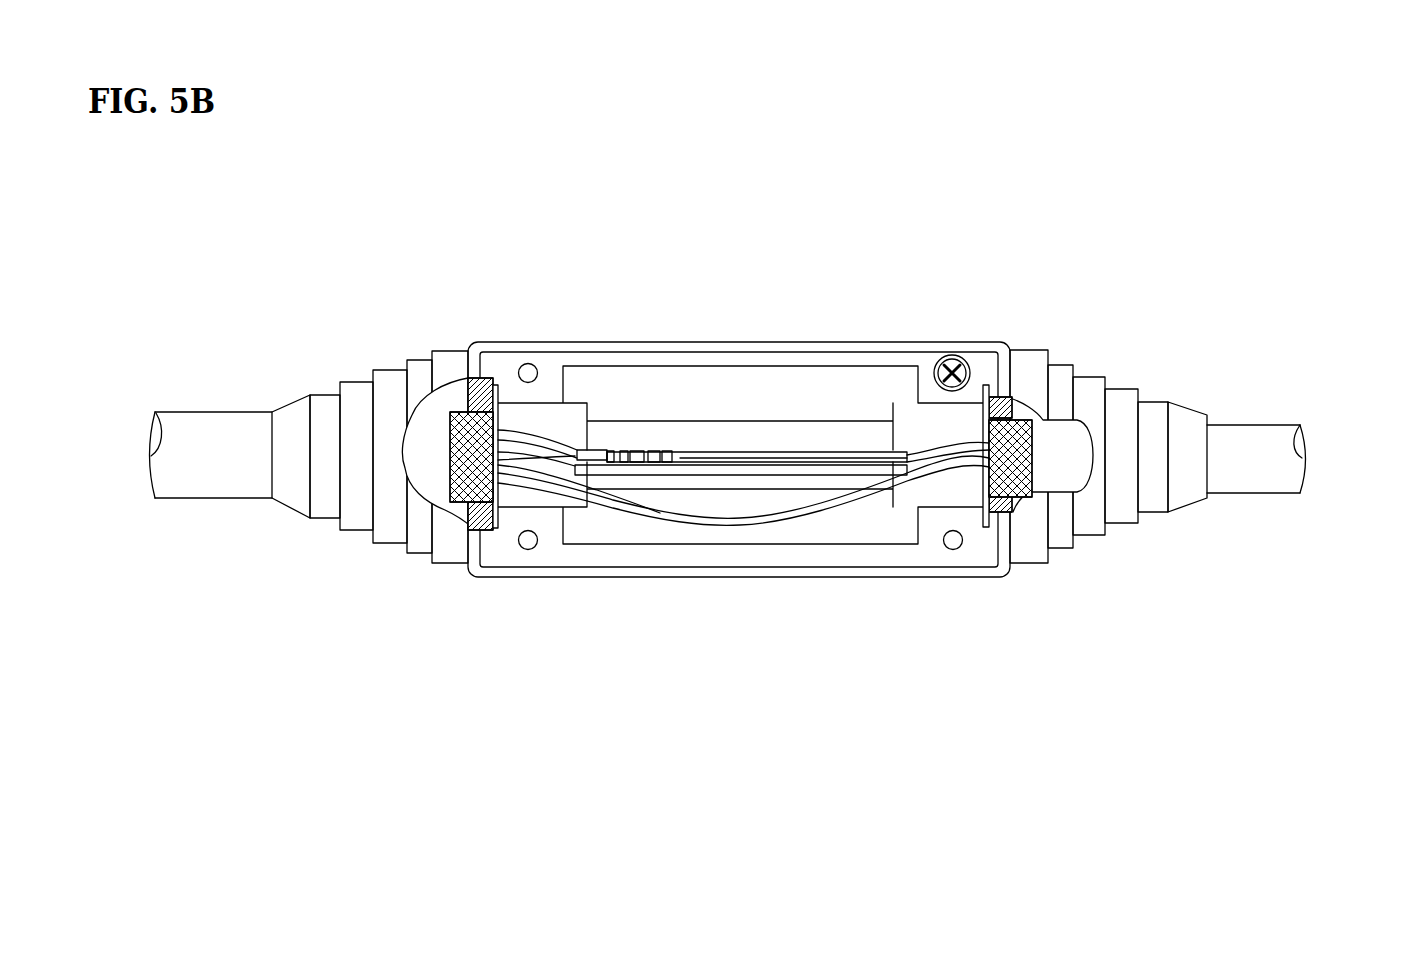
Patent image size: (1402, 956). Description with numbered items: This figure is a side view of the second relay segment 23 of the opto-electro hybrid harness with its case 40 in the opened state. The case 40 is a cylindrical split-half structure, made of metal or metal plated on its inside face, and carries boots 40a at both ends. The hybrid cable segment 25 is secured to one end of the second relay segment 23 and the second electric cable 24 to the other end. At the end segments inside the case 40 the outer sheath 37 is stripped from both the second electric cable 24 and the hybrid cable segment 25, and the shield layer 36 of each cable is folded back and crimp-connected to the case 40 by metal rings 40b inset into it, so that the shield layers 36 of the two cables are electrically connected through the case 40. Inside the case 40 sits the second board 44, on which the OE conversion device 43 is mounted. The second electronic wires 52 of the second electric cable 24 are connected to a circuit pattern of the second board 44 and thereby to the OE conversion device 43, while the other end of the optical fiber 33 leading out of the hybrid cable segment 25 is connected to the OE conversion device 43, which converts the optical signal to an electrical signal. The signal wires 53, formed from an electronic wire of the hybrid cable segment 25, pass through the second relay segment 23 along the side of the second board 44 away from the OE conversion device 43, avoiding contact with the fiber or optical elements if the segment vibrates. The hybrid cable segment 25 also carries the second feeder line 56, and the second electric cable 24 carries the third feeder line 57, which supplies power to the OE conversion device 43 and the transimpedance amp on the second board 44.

The second relay segment 23 is at (914, 244).
The second electric cable 24 is at (190, 410).
The hybrid cable segment 25 is at (1228, 425).
The optical fiber 33 is at (808, 420).
The shield layer 36 is at (462, 502).
The outer sheath 37 is at (427, 488).
The case 40 is at (777, 340).
The boot 40a is at (368, 371).
The metal ring 40b is at (490, 385).
The OE conversion device 43 is at (628, 451).
The second board 44 is at (783, 470).
The second electronic wires 52 is at (520, 437).
The signal wires 53 is at (710, 522).
The second feeder line 56 is at (607, 505).
The third feeder line 57 is at (574, 447).